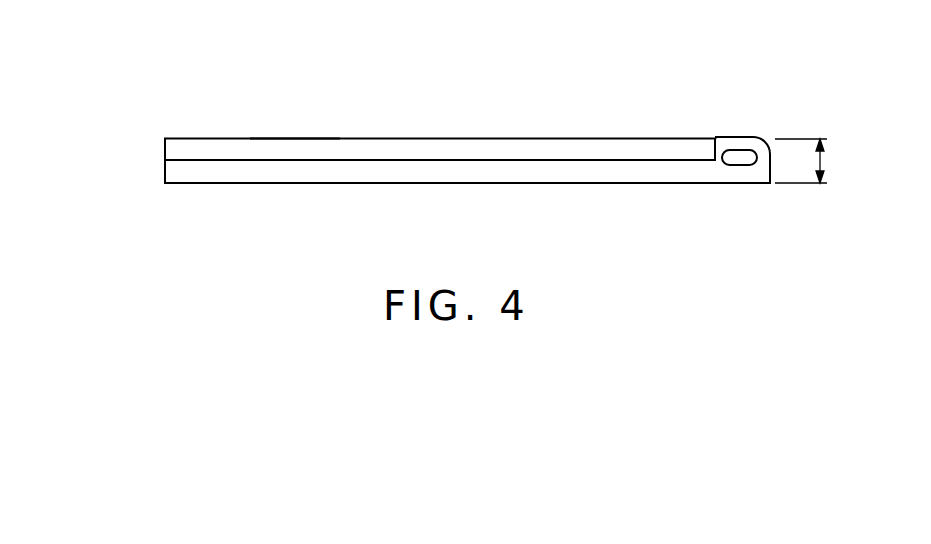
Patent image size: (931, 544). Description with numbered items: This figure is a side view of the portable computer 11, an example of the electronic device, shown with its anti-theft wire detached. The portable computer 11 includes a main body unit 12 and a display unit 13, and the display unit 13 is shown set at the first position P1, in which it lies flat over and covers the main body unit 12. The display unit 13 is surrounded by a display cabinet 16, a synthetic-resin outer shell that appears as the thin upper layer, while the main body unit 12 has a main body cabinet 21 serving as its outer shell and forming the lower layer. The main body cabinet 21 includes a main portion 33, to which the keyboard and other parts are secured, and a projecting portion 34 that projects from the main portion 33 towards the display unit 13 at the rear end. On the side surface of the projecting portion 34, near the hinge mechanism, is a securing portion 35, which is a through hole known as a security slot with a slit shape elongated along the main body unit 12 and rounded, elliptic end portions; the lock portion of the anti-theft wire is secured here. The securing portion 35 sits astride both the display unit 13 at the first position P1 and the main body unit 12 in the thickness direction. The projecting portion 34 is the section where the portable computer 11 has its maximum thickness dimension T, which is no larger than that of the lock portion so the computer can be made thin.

The portable computer 11 is at (474, 98).
The main body unit 12 is at (173, 197).
The display unit 13 is at (154, 124).
The display cabinet 16 is at (541, 138).
The main body cabinet 21 is at (547, 184).
The main portion 33 is at (657, 167).
The projecting portion 34 is at (716, 136).
The securing portion 35 is at (741, 149).
The first position P1 is at (297, 125).
The maximum thickness dimension T is at (811, 161).